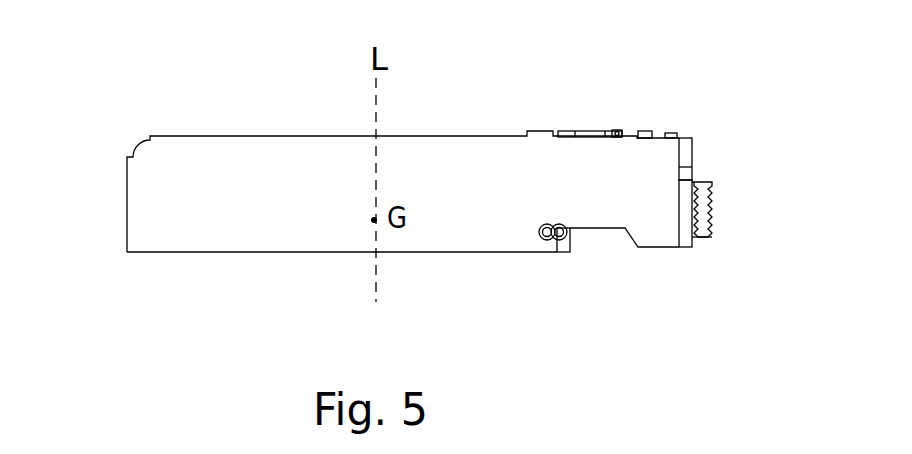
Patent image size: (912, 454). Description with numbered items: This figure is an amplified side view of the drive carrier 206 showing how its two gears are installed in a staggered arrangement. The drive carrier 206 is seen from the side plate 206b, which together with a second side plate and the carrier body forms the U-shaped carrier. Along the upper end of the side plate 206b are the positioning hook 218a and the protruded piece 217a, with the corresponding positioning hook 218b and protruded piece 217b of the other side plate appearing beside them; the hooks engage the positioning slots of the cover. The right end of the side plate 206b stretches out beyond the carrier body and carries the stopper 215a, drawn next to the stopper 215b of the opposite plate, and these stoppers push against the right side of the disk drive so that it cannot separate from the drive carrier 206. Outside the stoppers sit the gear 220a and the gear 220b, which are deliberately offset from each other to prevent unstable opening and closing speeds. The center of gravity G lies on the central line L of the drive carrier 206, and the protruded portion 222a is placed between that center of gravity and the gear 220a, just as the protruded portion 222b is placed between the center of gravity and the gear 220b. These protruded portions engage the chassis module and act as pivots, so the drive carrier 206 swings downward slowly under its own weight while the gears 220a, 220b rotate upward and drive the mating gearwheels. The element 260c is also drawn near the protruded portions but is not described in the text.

The drive carrier 206 is at (124, 203).
The side plate 206b is at (205, 230).
The positioning hook 218a is at (598, 131).
The positioning hook 218b is at (622, 131).
The protruded piece 217a is at (655, 131).
The protruded piece 217b is at (677, 133).
The stopper 215a is at (693, 165).
The stopper 215b is at (693, 152).
The gear 220a is at (688, 227).
The gear 220b is at (713, 217).
The protruded portion 222a is at (540, 242).
The protruded portion 222b is at (578, 246).
The guide post 260c is at (558, 255).